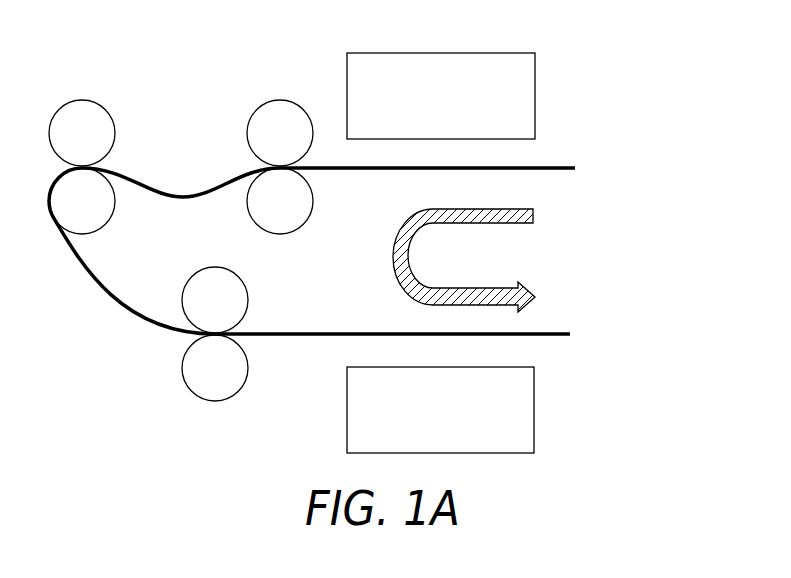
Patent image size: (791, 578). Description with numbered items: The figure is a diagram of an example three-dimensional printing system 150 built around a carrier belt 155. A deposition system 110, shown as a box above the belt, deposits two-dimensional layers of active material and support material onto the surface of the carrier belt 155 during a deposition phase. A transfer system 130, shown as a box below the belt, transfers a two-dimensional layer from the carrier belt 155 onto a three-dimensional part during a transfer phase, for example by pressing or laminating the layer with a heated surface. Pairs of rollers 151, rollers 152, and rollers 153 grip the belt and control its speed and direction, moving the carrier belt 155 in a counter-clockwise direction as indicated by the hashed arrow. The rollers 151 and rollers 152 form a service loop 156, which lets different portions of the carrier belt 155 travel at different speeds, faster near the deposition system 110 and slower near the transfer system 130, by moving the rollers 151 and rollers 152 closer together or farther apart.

The 3D printing system 150 is at (614, 48).
The deposition system 110 is at (535, 95).
The transfer system 130 is at (534, 410).
The service loop 156 is at (180, 47).
The carrier belt 155 is at (468, 172).
The rollers 152 is at (82, 100).
The rollers 151 is at (271, 100).
The rollers 153 is at (215, 267).